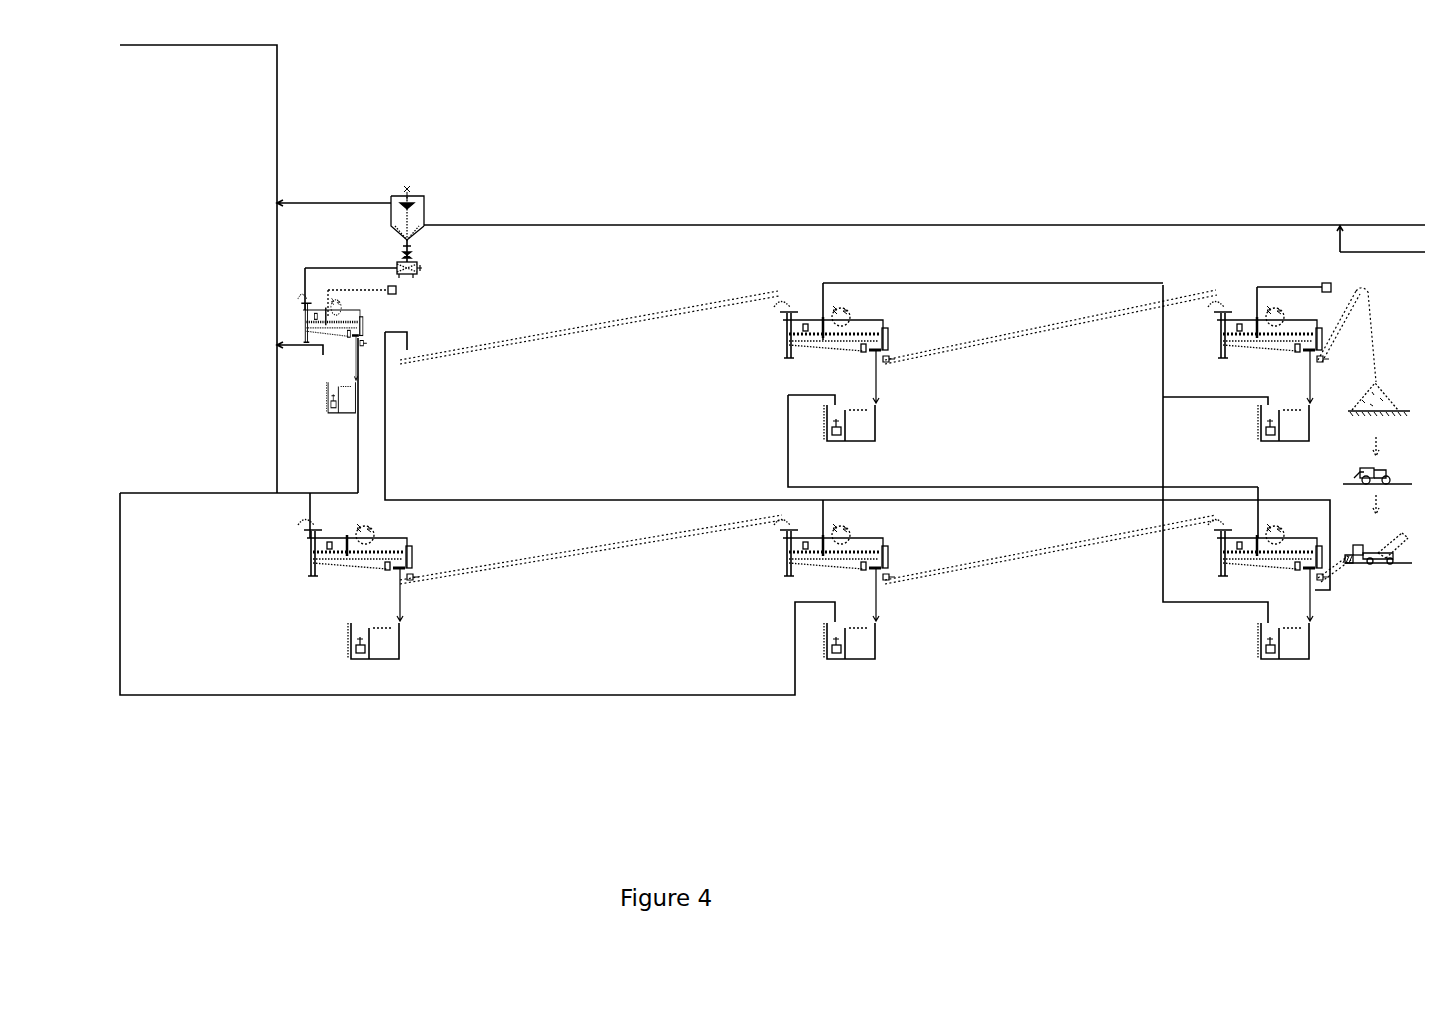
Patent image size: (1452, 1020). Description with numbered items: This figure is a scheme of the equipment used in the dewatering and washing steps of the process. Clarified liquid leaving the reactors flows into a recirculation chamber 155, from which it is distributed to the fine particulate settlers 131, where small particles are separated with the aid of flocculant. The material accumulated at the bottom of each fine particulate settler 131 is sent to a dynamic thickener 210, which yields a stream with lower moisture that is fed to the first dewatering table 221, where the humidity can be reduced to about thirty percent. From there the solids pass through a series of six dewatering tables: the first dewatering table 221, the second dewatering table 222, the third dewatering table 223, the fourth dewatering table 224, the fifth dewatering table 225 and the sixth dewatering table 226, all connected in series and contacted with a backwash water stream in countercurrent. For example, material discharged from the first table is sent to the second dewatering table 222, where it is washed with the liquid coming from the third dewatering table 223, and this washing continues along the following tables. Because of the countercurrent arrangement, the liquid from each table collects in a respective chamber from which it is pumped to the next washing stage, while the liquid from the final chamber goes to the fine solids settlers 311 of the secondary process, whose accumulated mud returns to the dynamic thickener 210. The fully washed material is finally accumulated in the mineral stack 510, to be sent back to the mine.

The recirculation chamber 155 is at (178, 265).
The dynamic thickener 210 is at (367, 226).
The fine solids settlers of the secondary process 311 is at (938, 224).
The fine particulate settlers 131 is at (1394, 243).
The first dewatering table 221 is at (347, 353).
The second dewatering table 222 is at (363, 586).
The third dewatering table 223 is at (843, 589).
The fourth dewatering table 224 is at (1268, 566).
The fifth dewatering table 225 is at (842, 368).
The sixth dewatering table 226 is at (1268, 368).
The mineral stack 510 is at (1388, 398).